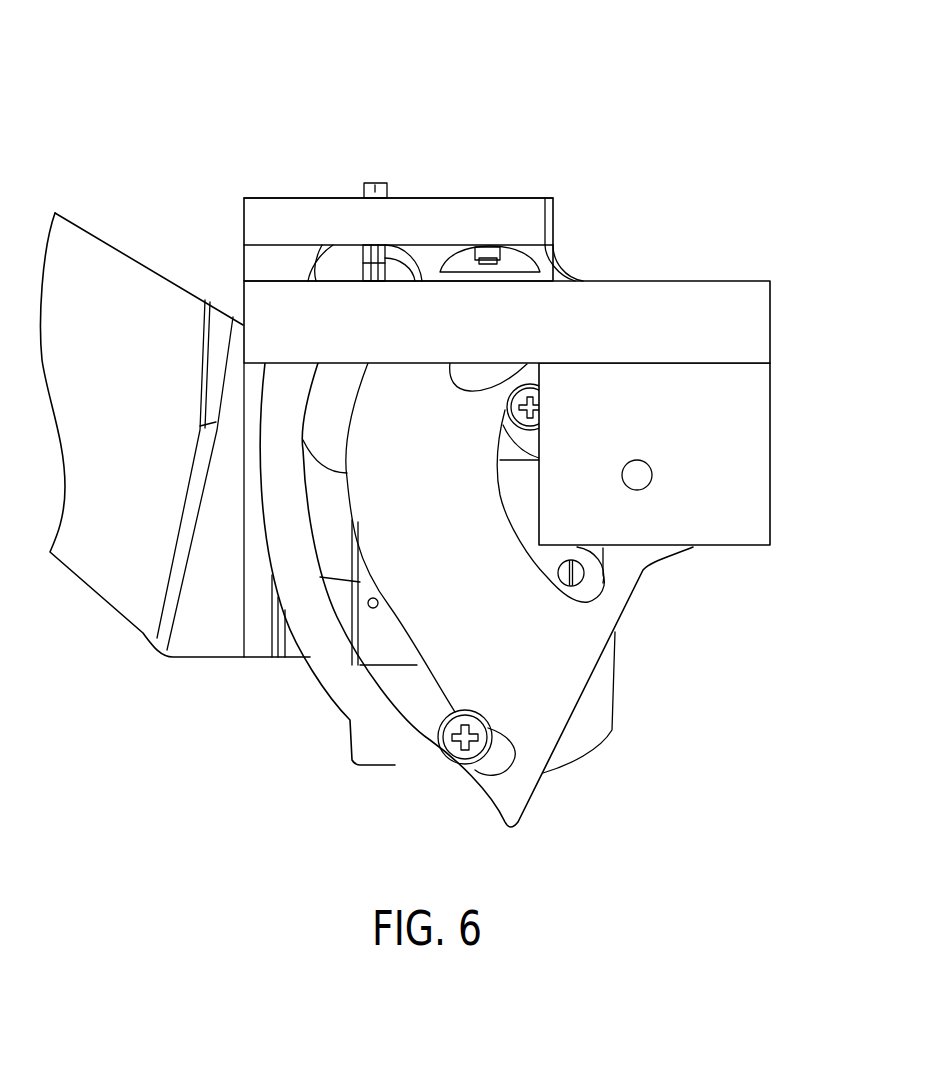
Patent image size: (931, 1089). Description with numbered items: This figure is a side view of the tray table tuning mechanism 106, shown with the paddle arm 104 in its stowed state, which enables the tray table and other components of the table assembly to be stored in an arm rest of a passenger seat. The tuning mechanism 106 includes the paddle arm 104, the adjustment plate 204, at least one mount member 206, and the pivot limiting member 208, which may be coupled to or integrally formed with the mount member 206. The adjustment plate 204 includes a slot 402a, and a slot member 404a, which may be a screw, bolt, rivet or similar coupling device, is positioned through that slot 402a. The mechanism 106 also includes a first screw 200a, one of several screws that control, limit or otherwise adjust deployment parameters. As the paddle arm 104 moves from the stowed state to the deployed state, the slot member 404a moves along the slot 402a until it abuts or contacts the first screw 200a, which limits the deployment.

The tray table tuning mechanism 106 is at (140, 87).
The paddle arm 104 is at (148, 288).
The first screw 200a is at (375, 183).
The pivot limiting member 208 is at (603, 298).
The mount member 206 is at (750, 505).
The adjustment plate 204 is at (550, 698).
The slot 402a is at (373, 645).
The slot member 404a is at (453, 767).